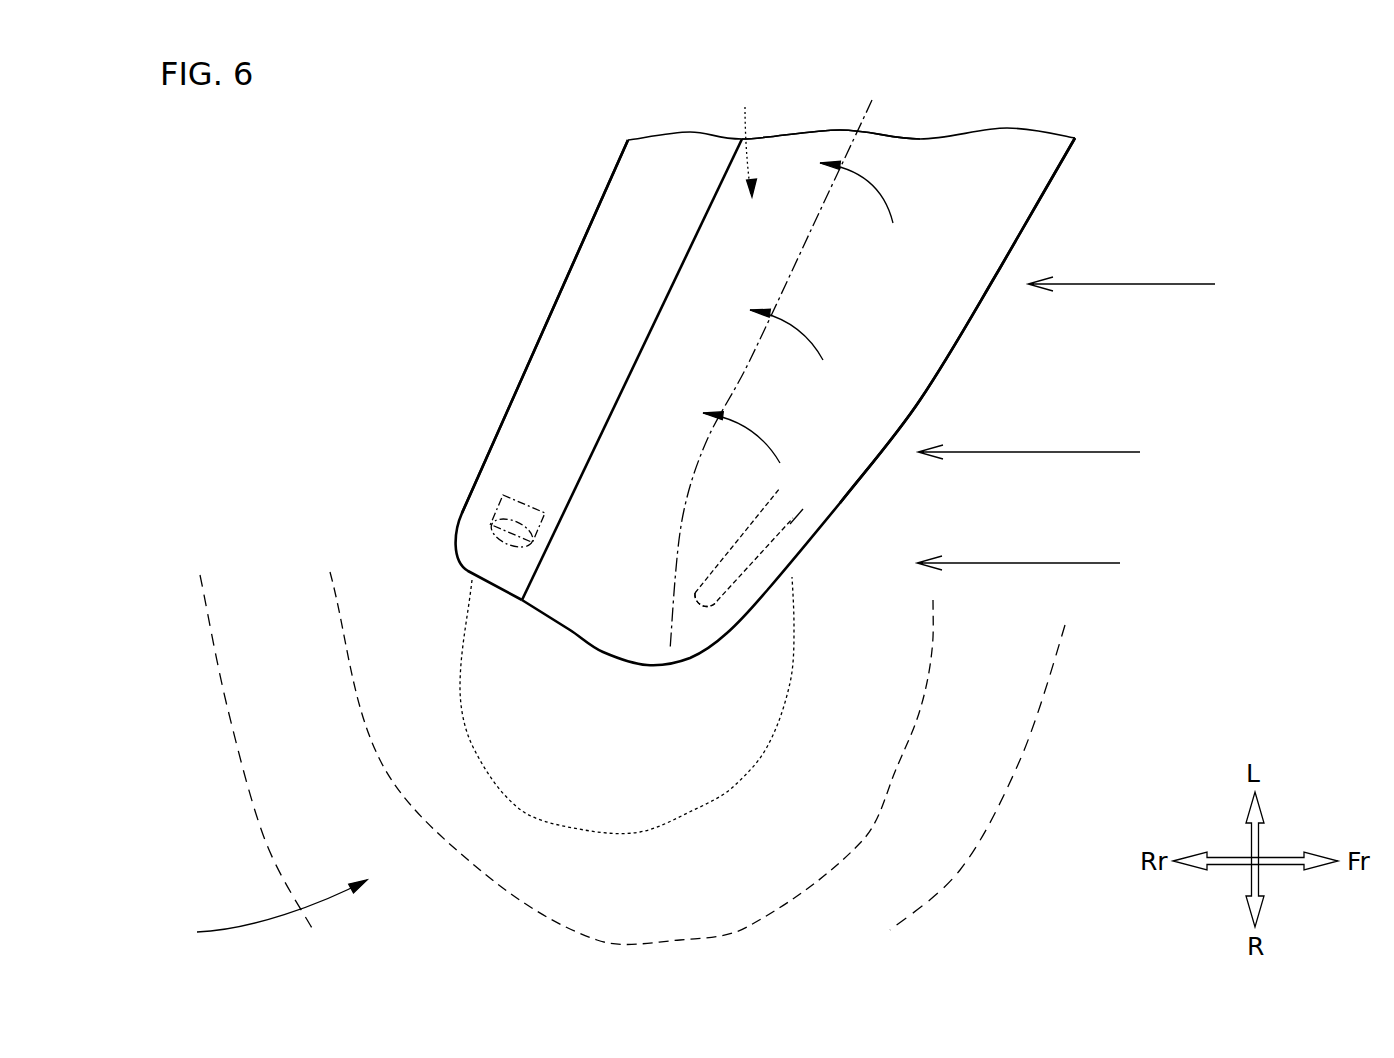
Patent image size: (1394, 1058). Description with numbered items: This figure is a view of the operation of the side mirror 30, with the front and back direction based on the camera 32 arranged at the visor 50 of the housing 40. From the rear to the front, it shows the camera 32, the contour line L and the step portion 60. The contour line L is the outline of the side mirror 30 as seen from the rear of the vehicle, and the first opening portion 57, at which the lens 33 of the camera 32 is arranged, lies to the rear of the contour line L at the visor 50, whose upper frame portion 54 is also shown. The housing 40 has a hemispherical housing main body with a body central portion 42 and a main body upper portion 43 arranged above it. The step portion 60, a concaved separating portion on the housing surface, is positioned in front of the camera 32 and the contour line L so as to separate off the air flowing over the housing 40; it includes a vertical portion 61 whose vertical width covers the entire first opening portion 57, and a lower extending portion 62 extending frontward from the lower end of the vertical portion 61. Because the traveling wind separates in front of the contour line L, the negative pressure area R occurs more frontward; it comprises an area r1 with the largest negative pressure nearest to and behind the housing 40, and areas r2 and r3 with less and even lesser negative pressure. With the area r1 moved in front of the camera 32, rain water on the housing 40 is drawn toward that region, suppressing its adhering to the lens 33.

The side mirror 30 is at (1067, 113).
The camera 32 is at (498, 503).
The lens 33 is at (510, 540).
The housing 40 is at (741, 138).
The body central portion 42 is at (935, 333).
The main body upper portion 43 is at (803, 147).
The visor 50 is at (612, 238).
The upper frame portion 54 is at (580, 327).
The first opening portion 57 is at (497, 540).
The step portion 60 is at (760, 502).
The vertical portion 61 is at (713, 603).
The lower extending portion 62 is at (795, 525).
The contour line L is at (772, 365).
The negative pressure area R is at (268, 912).
The area having the largest negative pressure r1 is at (615, 770).
The area having less negative pressure r2 is at (455, 795).
The area having even lesser negative pressure r3 is at (318, 812).